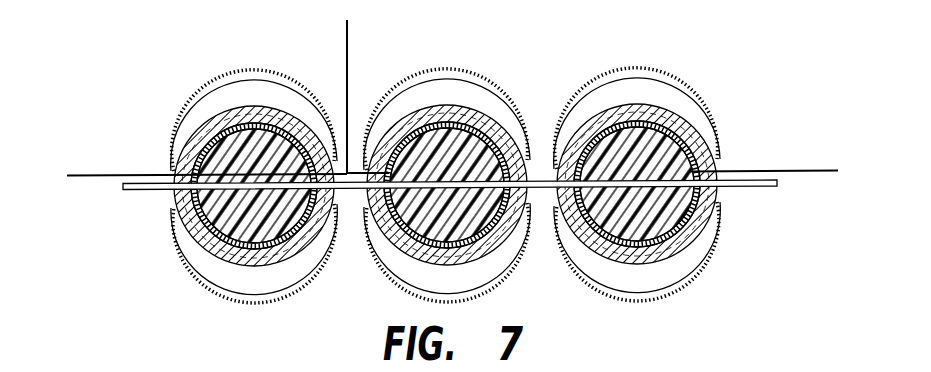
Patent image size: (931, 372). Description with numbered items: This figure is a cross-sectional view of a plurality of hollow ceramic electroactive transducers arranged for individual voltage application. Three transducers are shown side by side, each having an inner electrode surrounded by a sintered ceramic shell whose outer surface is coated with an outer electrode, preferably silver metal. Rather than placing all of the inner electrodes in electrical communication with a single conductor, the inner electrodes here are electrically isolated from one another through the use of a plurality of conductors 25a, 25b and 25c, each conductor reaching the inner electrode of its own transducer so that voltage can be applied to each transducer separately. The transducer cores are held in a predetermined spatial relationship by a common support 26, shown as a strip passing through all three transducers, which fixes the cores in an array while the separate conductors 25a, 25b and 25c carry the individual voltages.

The conductor 25a is at (112, 175).
The conductor 25b is at (345, 32).
The conductor 25c is at (798, 170).
The support 26 is at (752, 188).